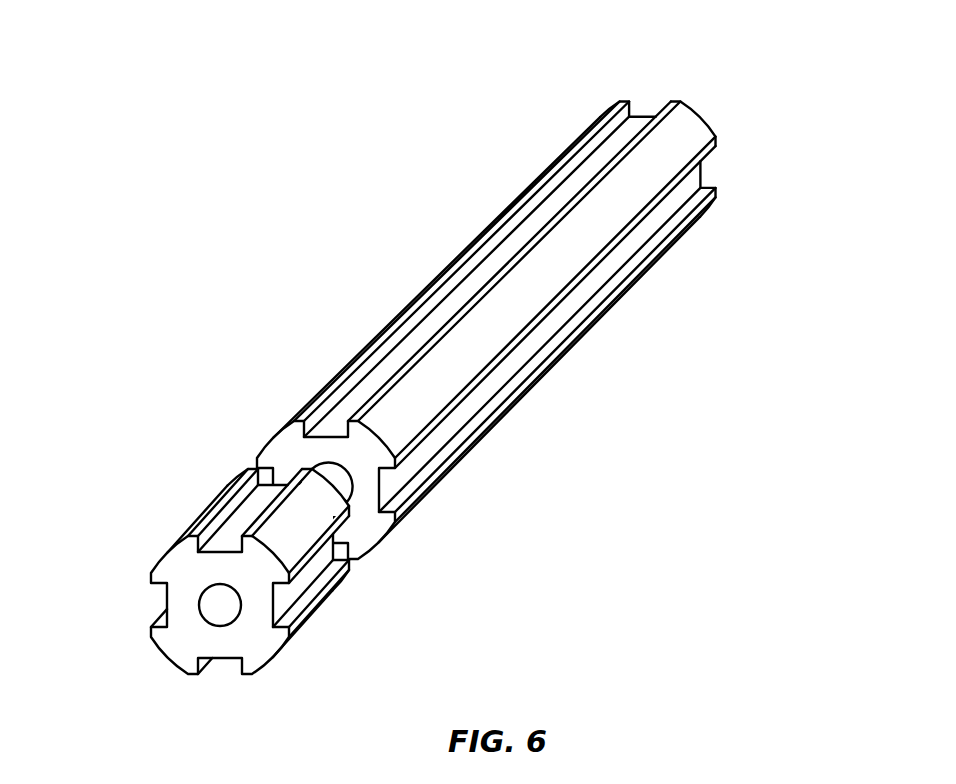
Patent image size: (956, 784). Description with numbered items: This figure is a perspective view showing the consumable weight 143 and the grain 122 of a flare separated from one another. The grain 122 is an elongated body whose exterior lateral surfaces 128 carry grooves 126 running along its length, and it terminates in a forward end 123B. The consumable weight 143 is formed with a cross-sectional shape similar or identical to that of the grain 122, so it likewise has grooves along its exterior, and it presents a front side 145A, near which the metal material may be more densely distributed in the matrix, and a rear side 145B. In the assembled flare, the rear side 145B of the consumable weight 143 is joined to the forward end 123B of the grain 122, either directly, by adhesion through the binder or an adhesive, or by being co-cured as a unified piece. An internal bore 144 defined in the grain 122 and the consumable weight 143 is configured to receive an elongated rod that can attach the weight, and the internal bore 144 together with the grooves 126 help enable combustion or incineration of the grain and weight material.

The grain 122 is at (315, 300).
The grooves 126 is at (722, 155).
The exterior lateral surfaces 128 is at (570, 307).
The forward end 123B is at (367, 519).
The internal bore 144 is at (346, 486).
The consumable weight 143 is at (162, 510).
The front side 145A is at (255, 637).
The rear side 145B is at (283, 485).